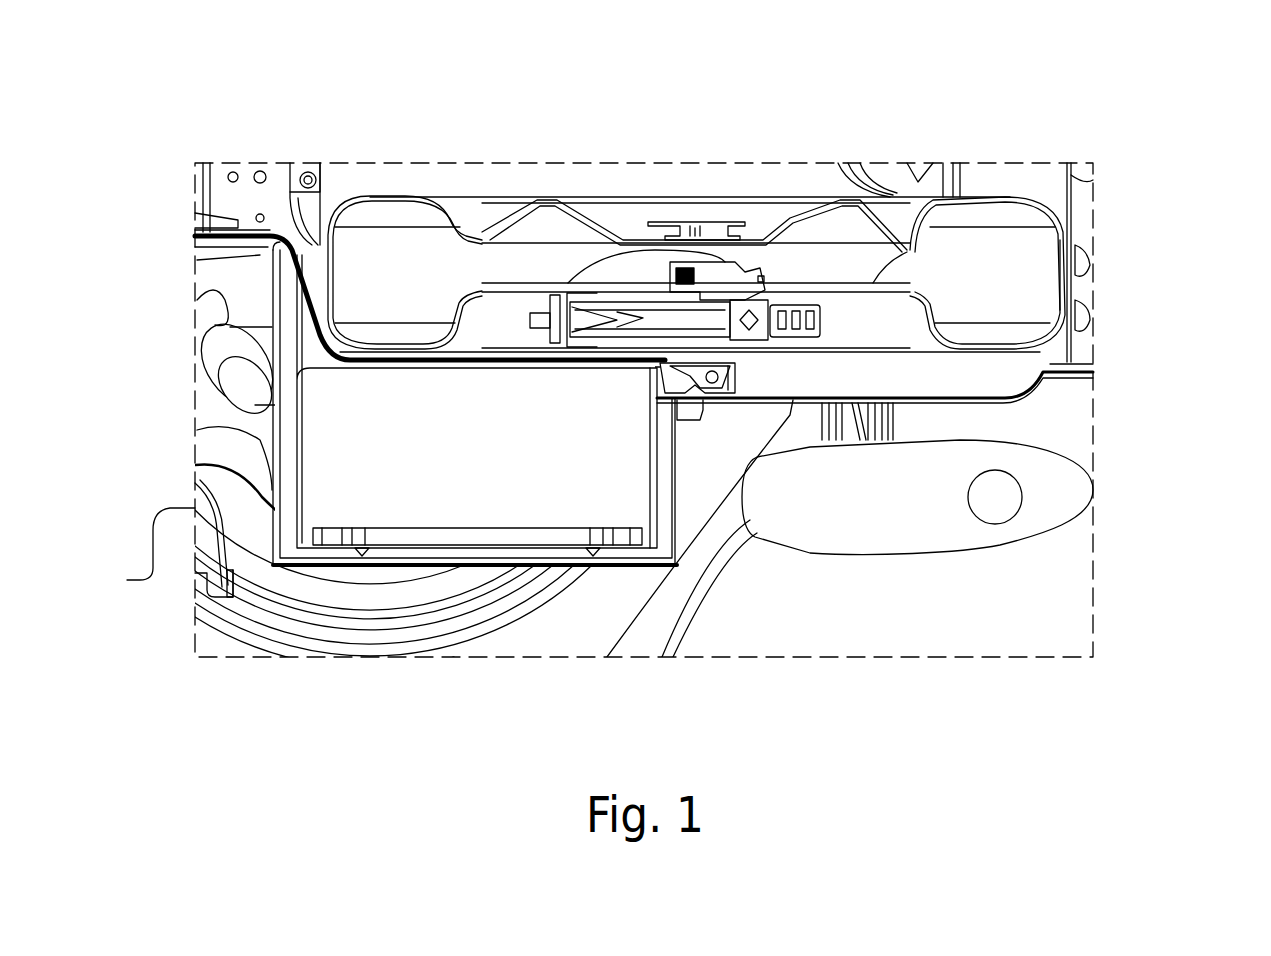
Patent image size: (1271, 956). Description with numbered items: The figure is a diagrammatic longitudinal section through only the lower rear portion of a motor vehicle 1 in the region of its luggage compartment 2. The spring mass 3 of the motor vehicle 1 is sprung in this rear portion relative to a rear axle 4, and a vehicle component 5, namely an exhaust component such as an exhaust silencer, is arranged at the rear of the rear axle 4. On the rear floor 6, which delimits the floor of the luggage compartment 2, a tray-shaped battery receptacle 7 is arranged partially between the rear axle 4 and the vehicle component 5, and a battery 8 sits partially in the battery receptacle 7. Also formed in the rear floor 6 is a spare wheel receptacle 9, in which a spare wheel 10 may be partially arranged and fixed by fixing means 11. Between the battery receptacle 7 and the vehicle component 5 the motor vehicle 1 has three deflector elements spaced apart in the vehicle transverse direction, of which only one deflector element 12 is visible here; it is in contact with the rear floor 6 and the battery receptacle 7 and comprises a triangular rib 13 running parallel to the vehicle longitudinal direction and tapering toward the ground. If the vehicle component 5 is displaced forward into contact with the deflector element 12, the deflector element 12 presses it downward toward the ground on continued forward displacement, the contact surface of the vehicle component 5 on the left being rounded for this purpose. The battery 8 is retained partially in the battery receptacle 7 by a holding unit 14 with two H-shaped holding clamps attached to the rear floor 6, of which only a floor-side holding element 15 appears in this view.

The motor vehicle 1 is at (637, 108).
The luggage compartment 2 is at (696, 274).
The spring mass 3 is at (460, 165).
The rear axle 4 is at (170, 508).
The vehicle component 5 is at (893, 522).
The rear floor 6 is at (960, 398).
The battery receptacle 7 is at (285, 407).
The battery 8 is at (535, 488).
The spare wheel receptacle 9 is at (1015, 378).
The spare wheel 10 is at (1045, 273).
The fixing means 11 is at (707, 222).
The deflector element 12 is at (718, 483).
The triangular rib 13 is at (752, 547).
The holding unit 14 is at (377, 555).
The floor-side holding element 15 is at (443, 533).